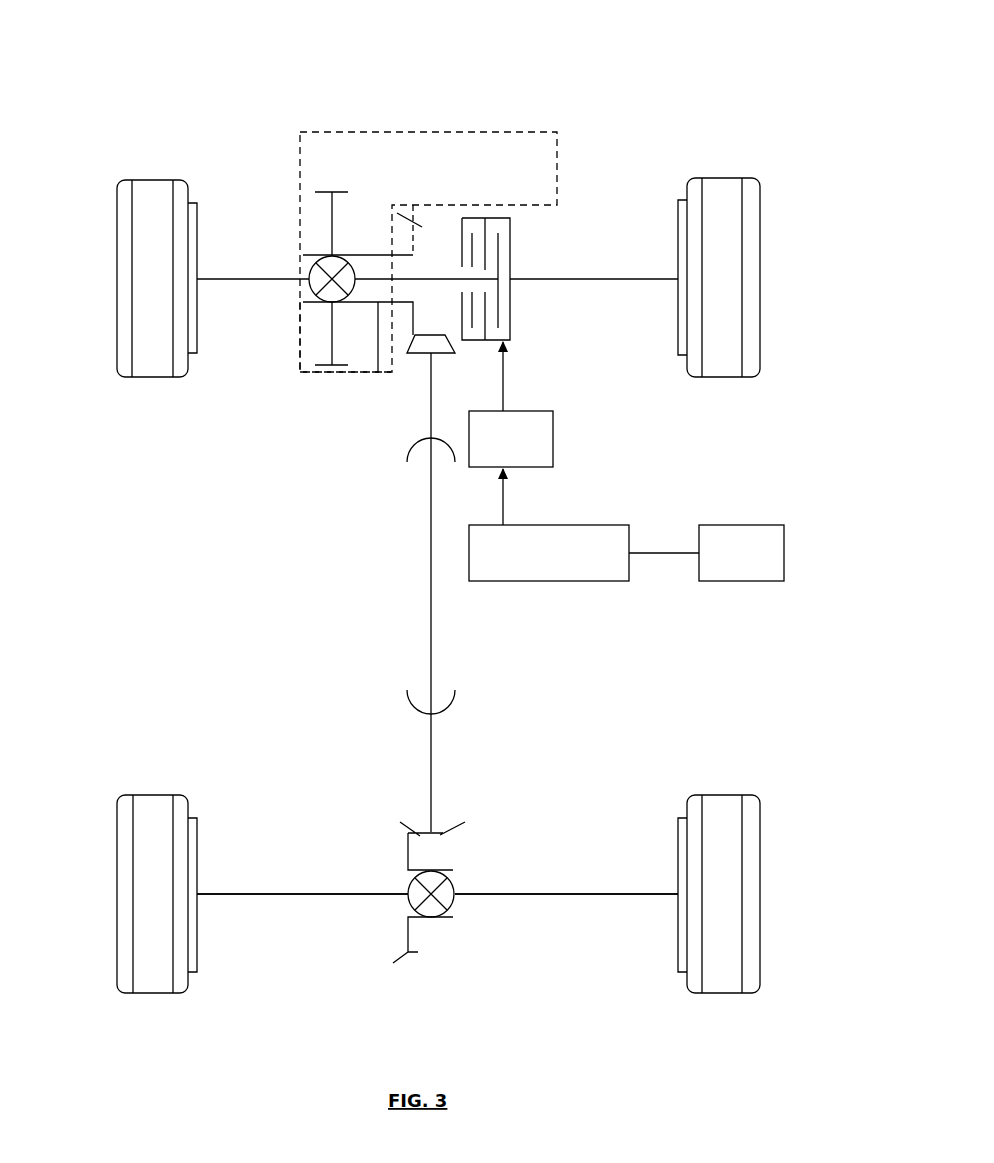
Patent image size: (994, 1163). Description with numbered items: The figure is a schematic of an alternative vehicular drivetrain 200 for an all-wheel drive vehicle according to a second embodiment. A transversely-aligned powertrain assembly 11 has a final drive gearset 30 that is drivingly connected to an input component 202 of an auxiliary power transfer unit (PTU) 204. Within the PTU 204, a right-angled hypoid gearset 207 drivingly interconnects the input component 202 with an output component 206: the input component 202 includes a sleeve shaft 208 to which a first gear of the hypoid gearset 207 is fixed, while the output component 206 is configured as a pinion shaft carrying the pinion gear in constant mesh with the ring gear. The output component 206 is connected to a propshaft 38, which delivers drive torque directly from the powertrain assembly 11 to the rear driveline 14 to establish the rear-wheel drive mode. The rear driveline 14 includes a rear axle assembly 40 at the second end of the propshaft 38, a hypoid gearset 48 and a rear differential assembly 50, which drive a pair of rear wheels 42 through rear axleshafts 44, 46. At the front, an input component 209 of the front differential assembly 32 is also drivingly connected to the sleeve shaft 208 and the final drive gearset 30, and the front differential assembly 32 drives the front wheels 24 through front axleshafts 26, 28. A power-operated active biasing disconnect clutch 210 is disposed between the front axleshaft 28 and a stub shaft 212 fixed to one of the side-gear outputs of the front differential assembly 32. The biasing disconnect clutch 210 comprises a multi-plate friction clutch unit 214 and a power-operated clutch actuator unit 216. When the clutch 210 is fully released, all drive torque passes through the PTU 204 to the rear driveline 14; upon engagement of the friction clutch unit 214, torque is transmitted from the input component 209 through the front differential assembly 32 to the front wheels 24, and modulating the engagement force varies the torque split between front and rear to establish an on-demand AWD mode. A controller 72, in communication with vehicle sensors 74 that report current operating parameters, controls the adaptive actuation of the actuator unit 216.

The vehicular drivetrain 200 is at (683, 88).
The powertrain assembly 11 is at (357, 157).
The input component 209 is at (322, 255).
The front axleshaft 26 is at (293, 278).
The right-angled hypoid gearset 207 is at (420, 217).
The input component 202 is at (402, 252).
The stub shaft 212 is at (432, 277).
The multi-plate friction clutch unit 214 is at (511, 217).
The front axleshaft 28 is at (580, 278).
The front wheels 24 is at (117, 290).
The front differential assembly 32 is at (295, 327).
The auxiliary power transfer unit 204 is at (355, 315).
The final drive gearset 30 is at (317, 375).
The sleeve shaft 208 is at (382, 303).
The output component 206 is at (428, 370).
The power-operated active biasing disconnect clutch 210 is at (528, 335).
The power-operated clutch actuator unit 216 is at (511, 468).
The controller 72 is at (584, 553).
The vehicle sensors 74 is at (741, 553).
The propshaft 38 is at (431, 629).
The rear driveline 14 is at (585, 747).
The hypoid gearset 48 is at (380, 817).
The rear axle assembly 40 is at (520, 858).
The rear wheels 42 is at (117, 893).
The rear axleshaft 44 is at (332, 894).
The rear axleshaft 46 is at (535, 894).
The rear differential assembly 50 is at (437, 930).